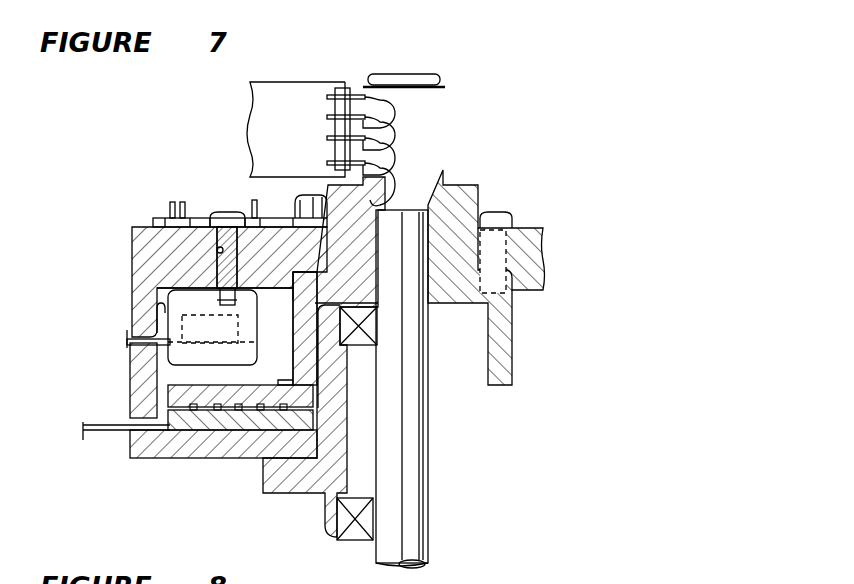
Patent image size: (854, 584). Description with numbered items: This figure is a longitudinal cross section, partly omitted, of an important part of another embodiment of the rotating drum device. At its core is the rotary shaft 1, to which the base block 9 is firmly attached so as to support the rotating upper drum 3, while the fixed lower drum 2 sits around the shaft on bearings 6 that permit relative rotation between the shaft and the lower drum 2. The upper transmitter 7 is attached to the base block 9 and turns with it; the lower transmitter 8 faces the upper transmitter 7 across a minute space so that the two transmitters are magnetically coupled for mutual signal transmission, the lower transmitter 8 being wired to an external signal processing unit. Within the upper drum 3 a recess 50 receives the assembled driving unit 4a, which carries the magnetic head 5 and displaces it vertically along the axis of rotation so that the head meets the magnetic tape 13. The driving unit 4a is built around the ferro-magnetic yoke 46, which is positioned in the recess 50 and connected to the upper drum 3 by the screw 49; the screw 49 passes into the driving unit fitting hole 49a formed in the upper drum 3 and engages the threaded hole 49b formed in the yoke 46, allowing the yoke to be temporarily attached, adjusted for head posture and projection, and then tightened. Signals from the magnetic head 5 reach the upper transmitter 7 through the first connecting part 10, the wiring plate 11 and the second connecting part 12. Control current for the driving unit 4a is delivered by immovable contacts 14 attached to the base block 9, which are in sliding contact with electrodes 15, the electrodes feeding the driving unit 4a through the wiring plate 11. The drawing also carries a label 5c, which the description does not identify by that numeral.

The rotary shaft 1 is at (413, 522).
The fixed lower drum 2 is at (290, 483).
The rotating upper drum 3 is at (140, 257).
The driving unit 4a is at (222, 302).
The magnetic head 5 is at (127, 340).
The post 5c is at (266, 290).
The bearings 6 is at (370, 328).
The upper transmitter 7 is at (170, 430).
The lower transmitter 8 is at (193, 420).
The base block 9 is at (498, 330).
The first connecting part 10 is at (168, 212).
The wiring plate 11 is at (202, 222).
The second connecting part 12 is at (297, 213).
The magnetic tape 13 is at (123, 290).
The contacts 14 is at (358, 92).
The electrodes 15 is at (403, 73).
The yoke 46 is at (223, 367).
The screw 49 is at (230, 215).
The driving unit fitting hole 49a is at (217, 250).
The threaded hole 49b is at (133, 393).
The recess 50 is at (160, 306).